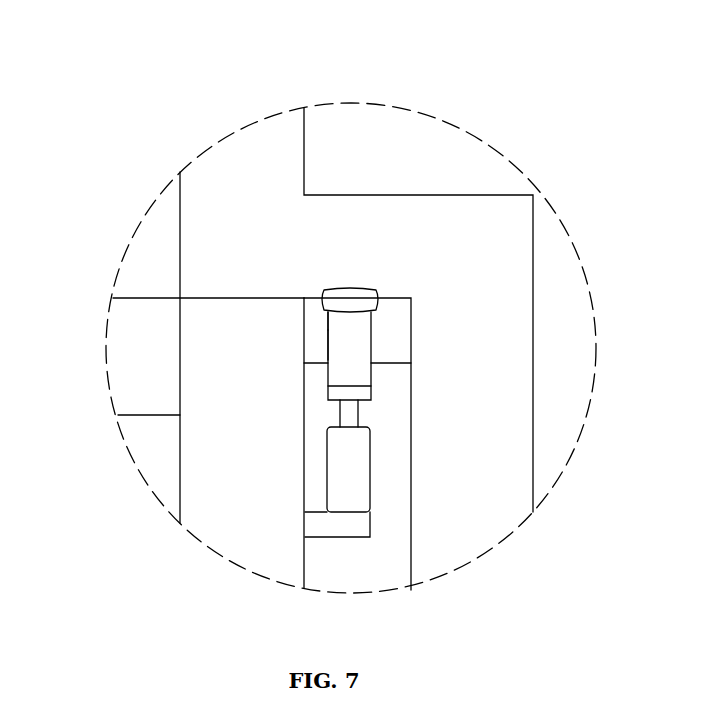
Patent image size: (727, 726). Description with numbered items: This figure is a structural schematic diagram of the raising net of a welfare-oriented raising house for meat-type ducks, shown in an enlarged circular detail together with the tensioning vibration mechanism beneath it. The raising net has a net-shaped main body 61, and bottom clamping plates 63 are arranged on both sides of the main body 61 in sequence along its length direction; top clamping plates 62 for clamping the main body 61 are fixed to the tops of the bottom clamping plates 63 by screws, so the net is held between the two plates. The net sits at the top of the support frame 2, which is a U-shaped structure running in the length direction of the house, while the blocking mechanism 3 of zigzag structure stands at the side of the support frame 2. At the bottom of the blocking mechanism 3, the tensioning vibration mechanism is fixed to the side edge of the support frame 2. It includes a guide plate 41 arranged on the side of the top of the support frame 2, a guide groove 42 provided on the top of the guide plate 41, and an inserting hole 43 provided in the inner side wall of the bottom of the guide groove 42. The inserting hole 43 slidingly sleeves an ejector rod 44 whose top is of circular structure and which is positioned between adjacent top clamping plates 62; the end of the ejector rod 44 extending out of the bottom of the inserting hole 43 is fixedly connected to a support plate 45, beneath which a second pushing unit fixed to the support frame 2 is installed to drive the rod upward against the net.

The support frame 2 is at (222, 437).
The blocking mechanism 3 is at (255, 193).
The guide plate 41 is at (390, 365).
The guide groove 42 is at (347, 293).
The inserting hole 43 is at (328, 342).
The ejector rod 44 is at (347, 350).
The support plate 45 is at (348, 400).
The main body 61 is at (145, 297).
The top clamping plate 62 is at (370, 297).
The bottom clamping plate 63 is at (330, 307).